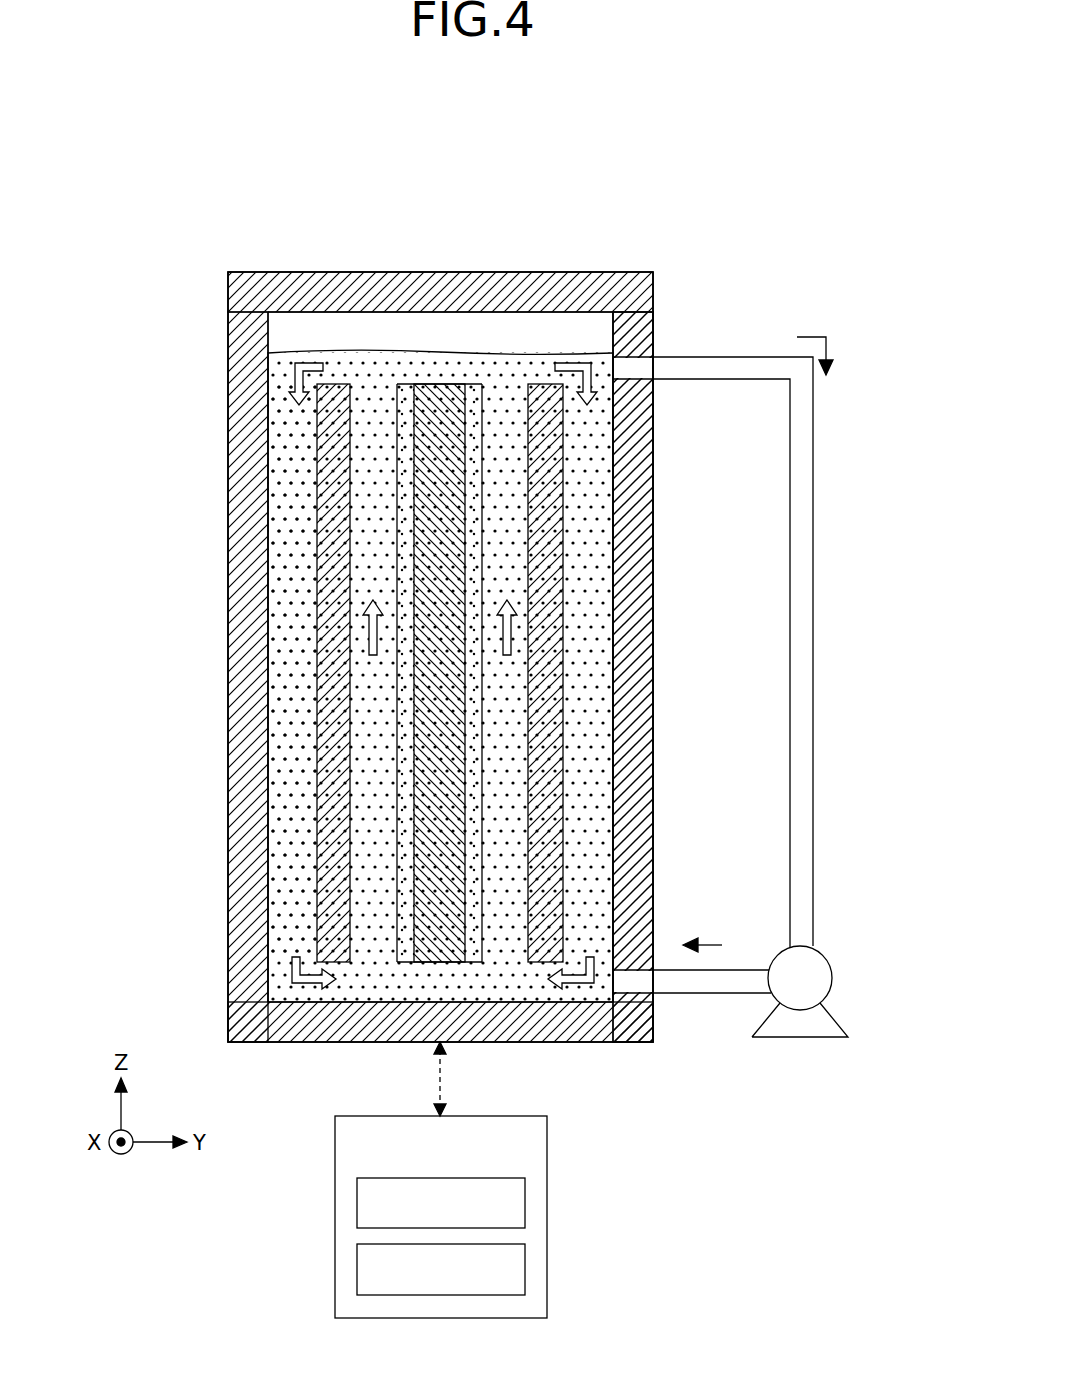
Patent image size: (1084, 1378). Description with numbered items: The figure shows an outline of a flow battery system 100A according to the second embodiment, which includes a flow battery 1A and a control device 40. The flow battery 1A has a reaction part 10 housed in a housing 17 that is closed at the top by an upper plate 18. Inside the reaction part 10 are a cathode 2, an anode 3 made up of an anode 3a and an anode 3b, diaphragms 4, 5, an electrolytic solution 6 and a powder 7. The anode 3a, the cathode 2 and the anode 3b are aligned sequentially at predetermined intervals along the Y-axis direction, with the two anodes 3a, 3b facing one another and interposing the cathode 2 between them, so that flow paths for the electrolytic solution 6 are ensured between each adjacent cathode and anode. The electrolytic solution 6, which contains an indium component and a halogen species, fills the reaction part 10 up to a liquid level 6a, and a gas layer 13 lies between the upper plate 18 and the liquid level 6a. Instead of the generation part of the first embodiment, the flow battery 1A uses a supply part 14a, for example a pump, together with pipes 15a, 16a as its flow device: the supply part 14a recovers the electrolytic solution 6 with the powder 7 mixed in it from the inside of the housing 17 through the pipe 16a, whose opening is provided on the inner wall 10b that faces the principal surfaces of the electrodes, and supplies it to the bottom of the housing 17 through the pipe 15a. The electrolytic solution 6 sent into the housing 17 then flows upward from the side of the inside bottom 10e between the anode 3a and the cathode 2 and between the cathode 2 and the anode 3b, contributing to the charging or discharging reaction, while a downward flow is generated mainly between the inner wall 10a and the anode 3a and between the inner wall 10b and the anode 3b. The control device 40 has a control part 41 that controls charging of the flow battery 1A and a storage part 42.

The flow battery system 100A is at (601, 160).
The flow battery 1A is at (675, 217).
The cathode 2 is at (425, 470).
The anode 3 is at (343, 673).
The anode 3a is at (327, 527).
The anode 3b is at (538, 565).
The diaphragm 4 is at (398, 703).
The diaphragm 5 is at (483, 705).
The electrolytic solution 6 is at (272, 396).
The liquid level 6a is at (587, 352).
The powder 7 is at (283, 757).
The reaction part 10 is at (614, 597).
The inner wall 10a is at (272, 860).
The inner wall 10b is at (603, 893).
The inside bottom 10e is at (508, 990).
The gas layer 13 is at (275, 335).
The supply part 14a is at (833, 980).
The pipe 15a is at (700, 995).
The pipe 16a is at (816, 795).
The housing 17 is at (648, 787).
The upper plate 18 is at (653, 295).
The control device 40 is at (471, 1188).
The control part 41 is at (525, 1200).
The storage part 42 is at (525, 1267).